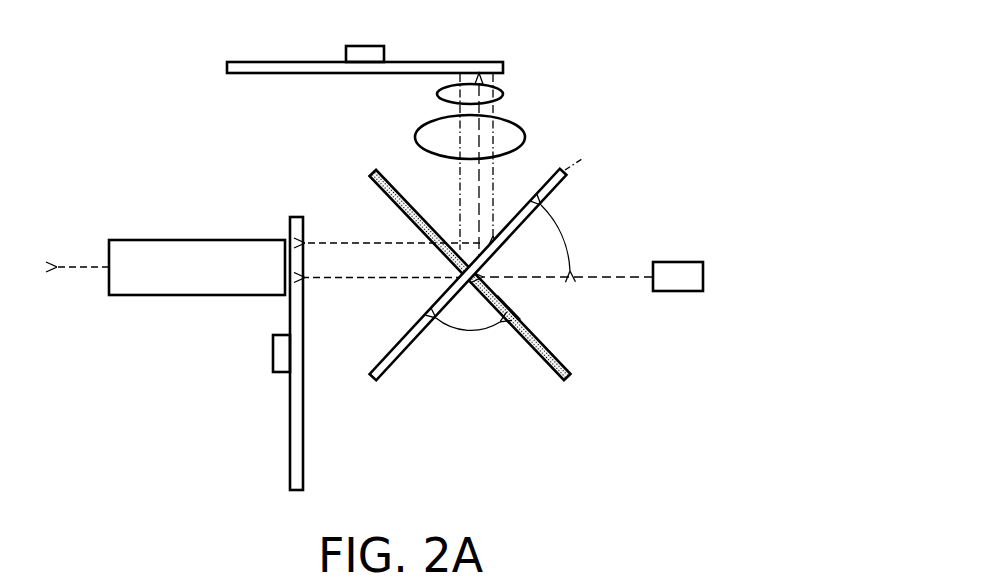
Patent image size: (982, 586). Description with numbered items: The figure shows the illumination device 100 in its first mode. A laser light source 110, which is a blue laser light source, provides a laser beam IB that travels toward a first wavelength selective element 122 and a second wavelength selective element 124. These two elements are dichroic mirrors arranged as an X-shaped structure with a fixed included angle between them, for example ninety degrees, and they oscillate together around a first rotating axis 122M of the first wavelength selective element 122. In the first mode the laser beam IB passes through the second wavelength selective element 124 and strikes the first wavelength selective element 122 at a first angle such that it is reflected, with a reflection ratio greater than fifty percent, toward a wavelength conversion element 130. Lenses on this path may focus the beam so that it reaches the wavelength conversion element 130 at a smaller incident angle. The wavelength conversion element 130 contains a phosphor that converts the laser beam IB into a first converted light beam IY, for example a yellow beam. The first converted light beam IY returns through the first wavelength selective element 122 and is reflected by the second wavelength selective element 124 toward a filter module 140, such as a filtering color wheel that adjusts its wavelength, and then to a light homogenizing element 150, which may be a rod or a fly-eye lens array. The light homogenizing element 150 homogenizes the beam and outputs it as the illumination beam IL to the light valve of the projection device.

The illumination device 100 is at (802, 472).
The laser light source 110 is at (703, 277).
The first wavelength selective element 122 is at (555, 349).
The first rotating axis 122M is at (507, 303).
The second wavelength selective element 124 is at (403, 364).
The wavelength conversion element 130 is at (272, 62).
The filter module 140 is at (290, 419).
The light homogenizing element 150 is at (186, 240).
The laser beam IB is at (626, 276).
The first converted light beam IY is at (460, 180).
The illumination beam IL is at (89, 270).